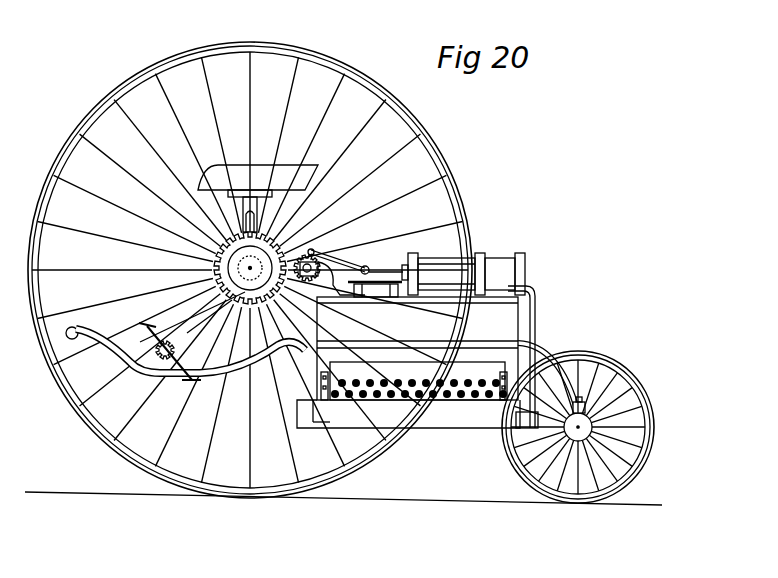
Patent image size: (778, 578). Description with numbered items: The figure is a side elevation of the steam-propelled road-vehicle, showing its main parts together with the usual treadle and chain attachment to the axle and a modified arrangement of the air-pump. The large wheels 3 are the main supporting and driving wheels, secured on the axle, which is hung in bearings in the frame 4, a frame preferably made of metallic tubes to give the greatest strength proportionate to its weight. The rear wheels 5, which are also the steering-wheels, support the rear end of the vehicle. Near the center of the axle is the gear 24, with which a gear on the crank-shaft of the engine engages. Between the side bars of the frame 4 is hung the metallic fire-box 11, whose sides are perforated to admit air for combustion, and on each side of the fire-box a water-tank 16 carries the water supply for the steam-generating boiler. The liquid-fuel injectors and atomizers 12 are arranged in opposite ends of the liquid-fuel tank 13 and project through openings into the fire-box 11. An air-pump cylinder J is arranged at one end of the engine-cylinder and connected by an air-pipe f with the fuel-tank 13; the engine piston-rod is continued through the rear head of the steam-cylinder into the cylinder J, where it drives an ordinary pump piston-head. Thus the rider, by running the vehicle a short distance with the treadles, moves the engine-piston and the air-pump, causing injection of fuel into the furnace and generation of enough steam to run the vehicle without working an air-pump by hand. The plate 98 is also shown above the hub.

The wheels 3 is at (126, 455).
The gear 24 is at (212, 271).
The plate 98 is at (258, 198).
The frame 4 is at (106, 341).
The air-pump cylinder J is at (466, 274).
The water-tank 16 is at (417, 348).
The fire-box 11 is at (418, 381).
The liquid-fuel injectors and atomizers 12 is at (318, 390).
The liquid-fuel tank 13 is at (408, 414).
The air-pipe f is at (536, 312).
The rear wheels 5 is at (510, 473).